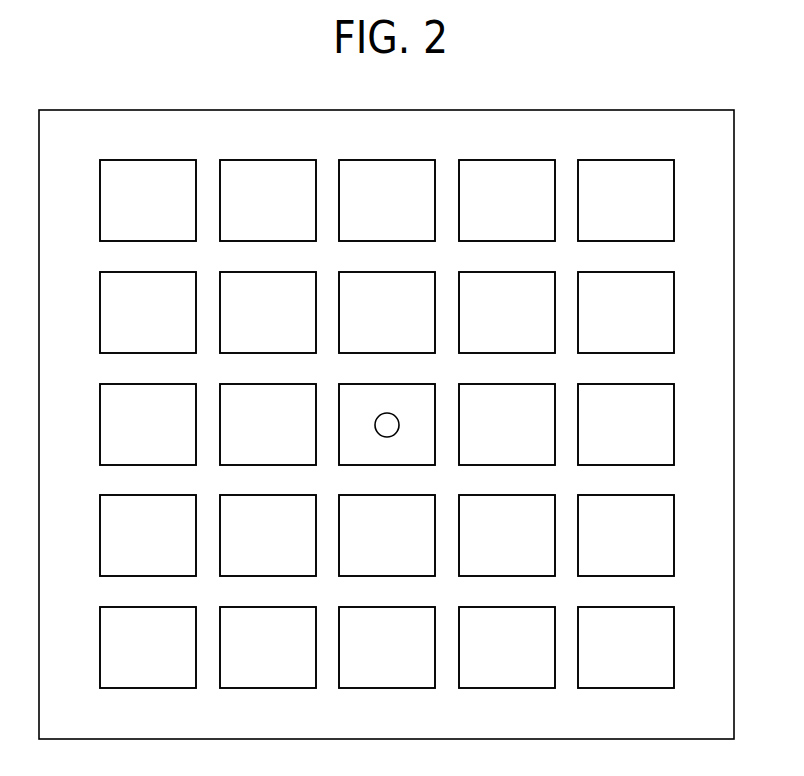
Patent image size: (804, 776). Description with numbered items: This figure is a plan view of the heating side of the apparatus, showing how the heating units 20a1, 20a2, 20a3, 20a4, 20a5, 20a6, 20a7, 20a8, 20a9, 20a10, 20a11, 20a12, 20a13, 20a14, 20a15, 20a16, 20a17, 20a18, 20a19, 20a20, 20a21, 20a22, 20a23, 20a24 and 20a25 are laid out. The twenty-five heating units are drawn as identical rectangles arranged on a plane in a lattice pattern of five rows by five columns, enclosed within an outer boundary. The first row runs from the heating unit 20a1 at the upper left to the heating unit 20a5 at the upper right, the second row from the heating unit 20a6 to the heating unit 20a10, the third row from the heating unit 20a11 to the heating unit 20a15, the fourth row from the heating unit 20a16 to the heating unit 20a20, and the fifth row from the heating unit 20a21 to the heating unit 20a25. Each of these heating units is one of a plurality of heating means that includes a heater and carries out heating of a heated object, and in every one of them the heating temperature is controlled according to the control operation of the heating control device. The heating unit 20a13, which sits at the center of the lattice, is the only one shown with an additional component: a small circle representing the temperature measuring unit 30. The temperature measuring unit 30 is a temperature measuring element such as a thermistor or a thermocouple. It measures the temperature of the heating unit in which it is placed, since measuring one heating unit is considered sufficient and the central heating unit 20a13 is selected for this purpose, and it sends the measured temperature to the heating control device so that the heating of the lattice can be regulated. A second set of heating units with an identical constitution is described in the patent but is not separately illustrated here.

The heating unit 20a1 is at (130, 166).
The heating unit 20a2 is at (250, 166).
The heating unit 20a3 is at (369, 166).
The heating unit 20a4 is at (489, 166).
The heating unit 20a5 is at (608, 166).
The heating unit 20a6 is at (130, 278).
The heating unit 20a7 is at (250, 278).
The heating unit 20a8 is at (369, 278).
The heating unit 20a9 is at (489, 278).
The heating unit 20a10 is at (608, 278).
The heating unit 20a11 is at (130, 390).
The heating unit 20a12 is at (250, 390).
The heating unit 20a13 is at (369, 390).
The heating unit 20a14 is at (489, 390).
The heating unit 20a15 is at (608, 390).
The heating unit 20a16 is at (130, 501).
The heating unit 20a17 is at (250, 501).
The heating unit 20a18 is at (369, 501).
The heating unit 20a19 is at (489, 501).
The heating unit 20a20 is at (608, 501).
The heating unit 20a21 is at (130, 613).
The heating unit 20a22 is at (250, 613).
The heating unit 20a23 is at (369, 613).
The heating unit 20a24 is at (489, 613).
The heating unit 20a25 is at (608, 613).
The temperature measuring unit 30 is at (399, 425).